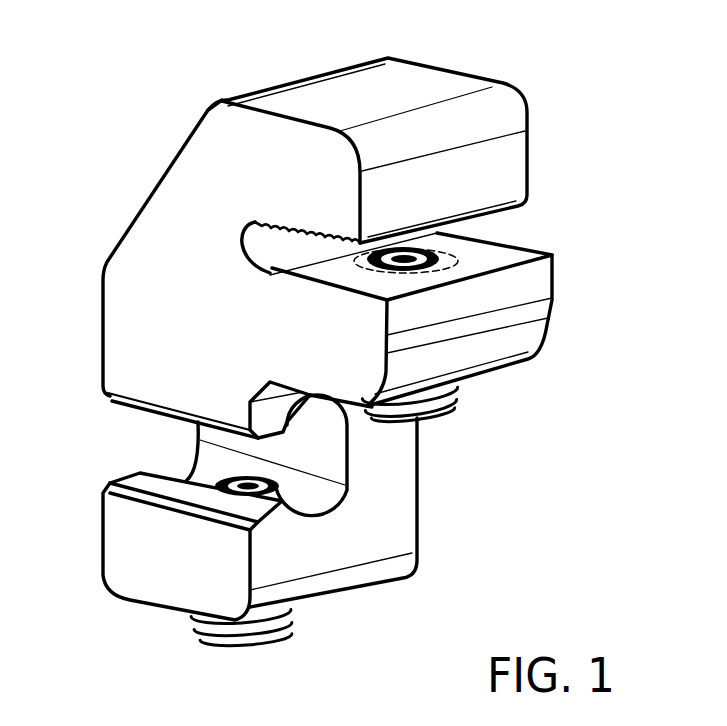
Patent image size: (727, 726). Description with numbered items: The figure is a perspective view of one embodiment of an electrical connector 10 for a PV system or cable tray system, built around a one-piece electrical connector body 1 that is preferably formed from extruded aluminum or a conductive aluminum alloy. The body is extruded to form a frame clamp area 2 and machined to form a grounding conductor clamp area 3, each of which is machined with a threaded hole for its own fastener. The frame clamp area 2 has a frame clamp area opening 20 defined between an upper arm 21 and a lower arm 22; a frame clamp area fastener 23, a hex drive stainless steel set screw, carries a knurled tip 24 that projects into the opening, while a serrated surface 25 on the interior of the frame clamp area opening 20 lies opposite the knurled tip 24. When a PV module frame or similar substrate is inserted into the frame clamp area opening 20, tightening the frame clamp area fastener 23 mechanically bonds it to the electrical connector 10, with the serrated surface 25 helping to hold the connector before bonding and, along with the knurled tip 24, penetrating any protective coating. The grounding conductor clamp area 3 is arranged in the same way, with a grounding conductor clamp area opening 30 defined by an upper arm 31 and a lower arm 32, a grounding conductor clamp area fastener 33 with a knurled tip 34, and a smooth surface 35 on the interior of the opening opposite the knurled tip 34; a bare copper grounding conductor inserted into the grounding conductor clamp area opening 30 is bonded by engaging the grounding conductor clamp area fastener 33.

The electrical connector body 1 is at (404, 75).
The frame clamp area 2 is at (328, 221).
The grounding conductor clamp area 3 is at (255, 524).
The electrical connector 10 is at (160, 166).
The frame clamp area opening 20 is at (406, 159).
The upper arm 21 is at (503, 168).
The lower arm 22 is at (531, 292).
The frame clamp area fastener 23 is at (452, 426).
The knurled tip 24 is at (447, 254).
The serrated surface 25 is at (304, 225).
The grounding conductor clamp area opening 30 is at (255, 501).
The upper arm 31 is at (153, 383).
The lower arm 32 is at (137, 562).
The grounding conductor clamp area fastener 33 is at (264, 657).
The knurled tip 34 is at (302, 512).
The smooth surface 35 is at (322, 416).